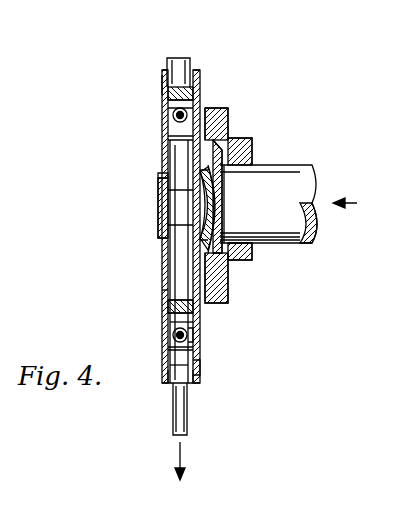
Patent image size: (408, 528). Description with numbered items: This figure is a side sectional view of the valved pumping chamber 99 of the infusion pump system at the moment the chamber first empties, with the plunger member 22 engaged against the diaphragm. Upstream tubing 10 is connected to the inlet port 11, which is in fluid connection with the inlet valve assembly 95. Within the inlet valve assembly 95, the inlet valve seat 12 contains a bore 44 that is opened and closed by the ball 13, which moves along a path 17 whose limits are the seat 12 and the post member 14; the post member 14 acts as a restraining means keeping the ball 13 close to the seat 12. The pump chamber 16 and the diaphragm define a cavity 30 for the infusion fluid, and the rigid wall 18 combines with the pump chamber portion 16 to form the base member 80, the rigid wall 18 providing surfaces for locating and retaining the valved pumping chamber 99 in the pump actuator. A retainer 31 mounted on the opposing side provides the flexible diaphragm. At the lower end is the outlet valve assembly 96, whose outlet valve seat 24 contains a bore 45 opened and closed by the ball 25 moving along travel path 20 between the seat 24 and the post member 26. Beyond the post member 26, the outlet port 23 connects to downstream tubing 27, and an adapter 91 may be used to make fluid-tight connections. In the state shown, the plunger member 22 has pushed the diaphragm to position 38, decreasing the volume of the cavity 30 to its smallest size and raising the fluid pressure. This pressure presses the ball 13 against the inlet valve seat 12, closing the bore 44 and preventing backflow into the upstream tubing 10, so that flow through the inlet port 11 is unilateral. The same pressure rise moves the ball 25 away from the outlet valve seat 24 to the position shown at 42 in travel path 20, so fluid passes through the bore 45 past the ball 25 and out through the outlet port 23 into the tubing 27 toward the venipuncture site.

The upstream tubing 10 is at (187, 58).
The inlet port 11 is at (165, 66).
The inlet valve seat 12 is at (164, 102).
The ball 13 is at (174, 118).
The post member 14 is at (166, 141).
The pump chamber 16 is at (180, 222).
The path 17 is at (180, 131).
The rigid wall 18 is at (230, 108).
The travel path 20 is at (183, 322).
The plunger member 22 is at (300, 172).
The outlet port 23 is at (196, 375).
The outlet valve seat 24 is at (168, 305).
The ball 25 is at (174, 333).
The post member 26 is at (200, 350).
The downstream tubing 27 is at (187, 420).
The cavity 30 is at (180, 215).
The retainer 31 is at (255, 139).
The diaphragm position 38 is at (185, 200).
The ball position 42 is at (193, 333).
The bore 44 is at (199, 92).
The bore 45 is at (163, 291).
The base member 80 is at (160, 240).
The adapter 91 is at (175, 378).
The inlet valve assembly 95 is at (161, 83).
The outlet valve assembly 96 is at (198, 367).
The valved pumping chamber 99 is at (157, 176).